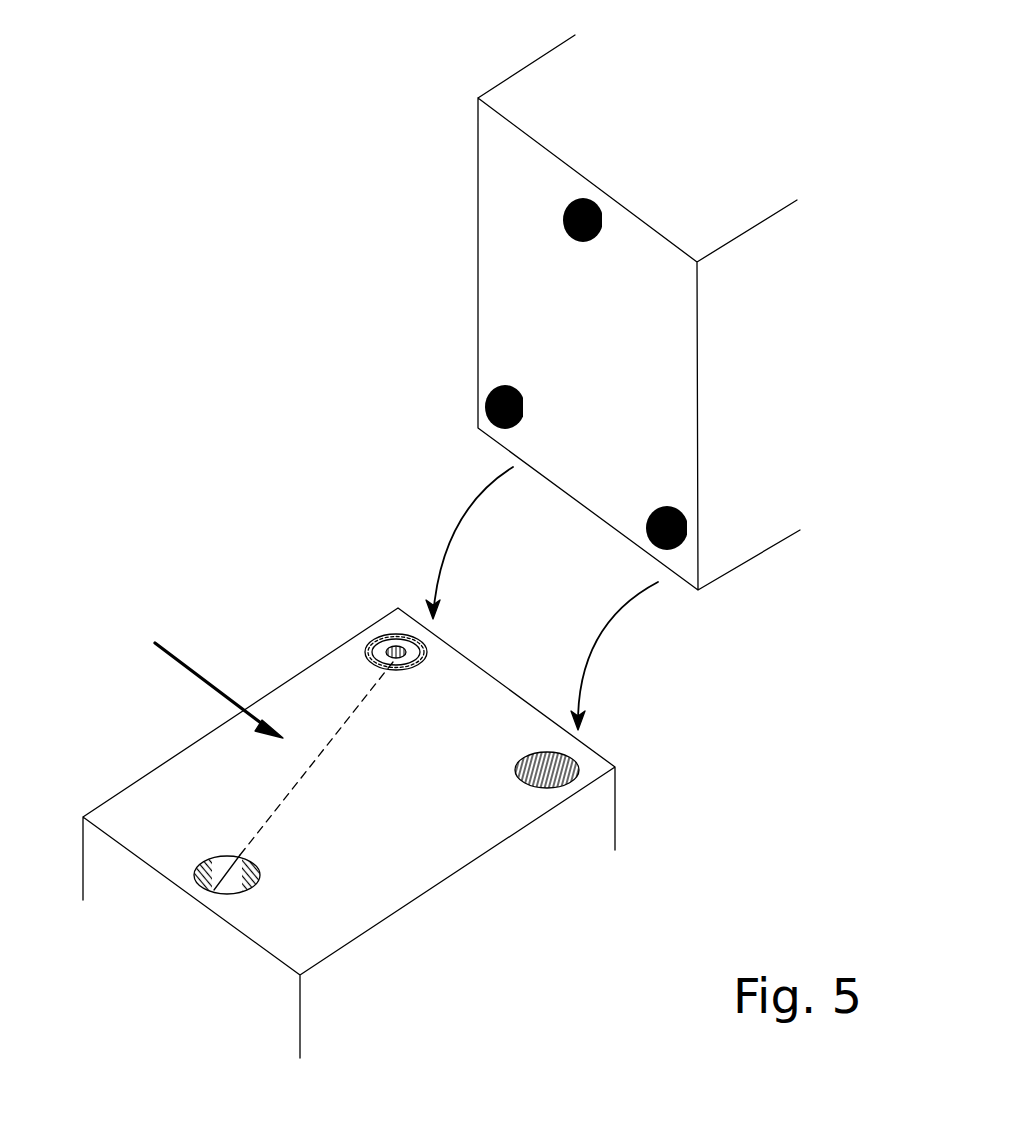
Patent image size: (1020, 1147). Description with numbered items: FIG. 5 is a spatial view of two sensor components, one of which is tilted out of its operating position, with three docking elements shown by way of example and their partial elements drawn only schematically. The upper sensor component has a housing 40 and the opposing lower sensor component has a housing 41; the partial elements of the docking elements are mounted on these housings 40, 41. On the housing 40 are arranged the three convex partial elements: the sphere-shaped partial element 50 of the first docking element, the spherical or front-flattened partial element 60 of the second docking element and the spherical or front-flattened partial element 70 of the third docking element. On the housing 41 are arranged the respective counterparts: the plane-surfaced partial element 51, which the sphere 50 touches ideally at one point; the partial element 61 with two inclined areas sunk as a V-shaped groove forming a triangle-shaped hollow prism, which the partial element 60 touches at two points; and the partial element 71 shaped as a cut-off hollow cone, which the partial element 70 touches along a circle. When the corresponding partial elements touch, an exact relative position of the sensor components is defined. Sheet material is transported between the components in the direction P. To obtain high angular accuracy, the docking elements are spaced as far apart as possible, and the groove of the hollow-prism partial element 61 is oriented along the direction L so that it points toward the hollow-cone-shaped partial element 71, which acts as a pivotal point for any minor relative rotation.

The housing 40 is at (649, 210).
The housing 41 is at (120, 792).
The convex partial element of the first docking element 50 is at (651, 524).
The counterpart partial element of the first docking element 51 is at (545, 784).
The convex partial element of the second docking element 60 is at (601, 231).
The counterpart partial element of the second docking element 61 is at (231, 888).
The convex partial element of the third docking element 70 is at (519, 422).
The counterpart partial element of the third docking element 71 is at (415, 662).
The transport direction P is at (219, 687).
The direction of the groove L is at (303, 776).